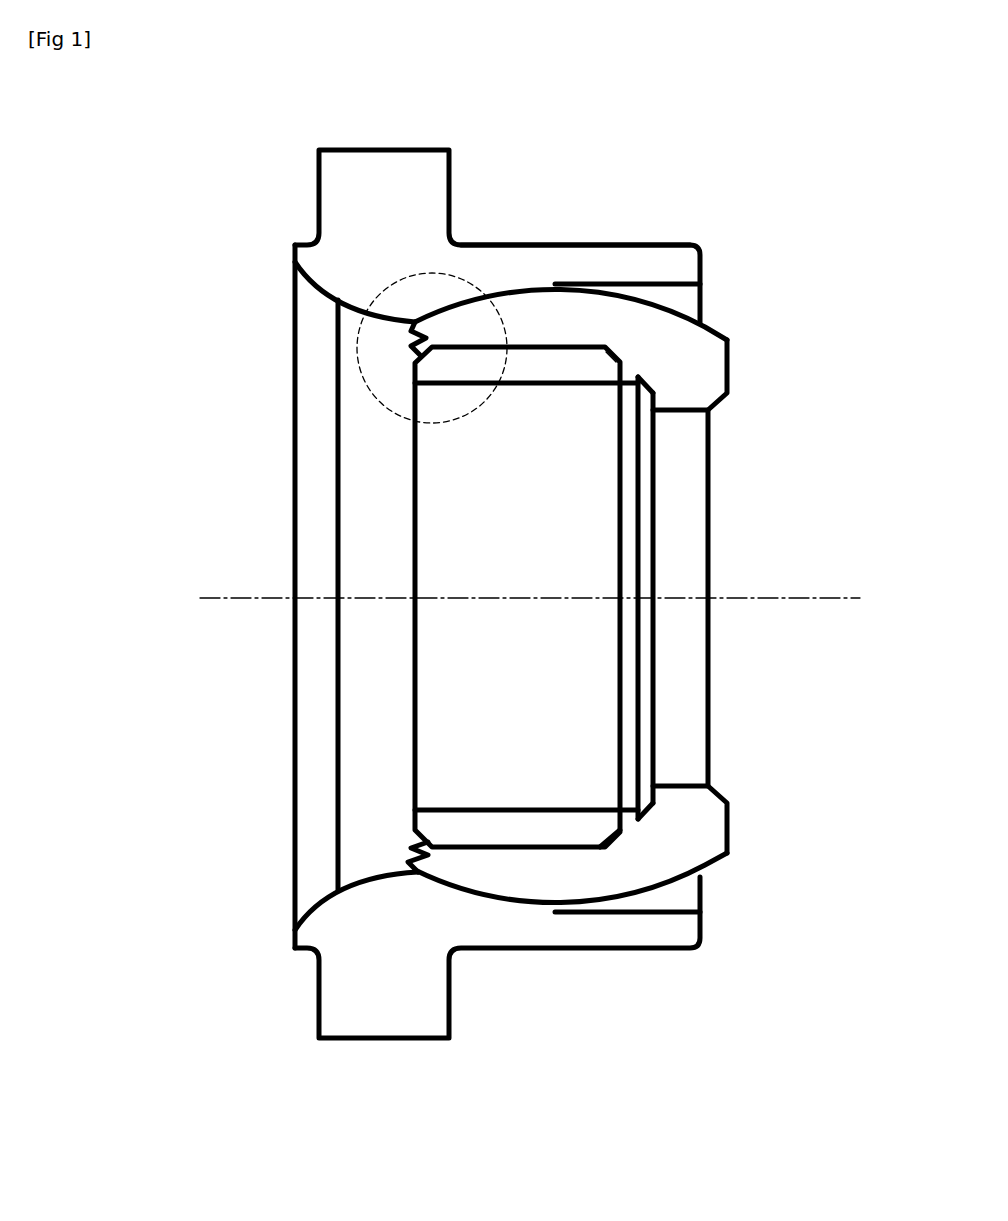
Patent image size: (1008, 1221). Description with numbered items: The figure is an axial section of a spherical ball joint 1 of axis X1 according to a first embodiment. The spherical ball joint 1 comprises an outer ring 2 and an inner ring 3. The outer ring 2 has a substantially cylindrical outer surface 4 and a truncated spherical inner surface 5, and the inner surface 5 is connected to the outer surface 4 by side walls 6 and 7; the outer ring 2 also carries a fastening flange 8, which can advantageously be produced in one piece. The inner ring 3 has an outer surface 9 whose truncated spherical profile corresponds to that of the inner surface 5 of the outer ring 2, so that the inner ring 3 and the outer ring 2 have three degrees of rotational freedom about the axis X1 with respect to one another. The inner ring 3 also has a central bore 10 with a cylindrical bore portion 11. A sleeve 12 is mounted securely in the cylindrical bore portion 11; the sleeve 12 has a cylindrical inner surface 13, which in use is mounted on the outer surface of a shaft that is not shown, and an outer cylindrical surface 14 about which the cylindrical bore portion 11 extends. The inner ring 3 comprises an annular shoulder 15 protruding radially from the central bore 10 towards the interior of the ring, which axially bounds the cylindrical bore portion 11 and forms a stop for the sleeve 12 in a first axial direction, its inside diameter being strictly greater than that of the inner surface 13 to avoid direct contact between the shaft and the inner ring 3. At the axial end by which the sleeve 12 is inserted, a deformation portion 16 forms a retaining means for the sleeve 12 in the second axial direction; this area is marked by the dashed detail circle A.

The spherical ball joint 1 is at (200, 172).
The outer ring 2 is at (722, 930).
The inner ring 3 is at (745, 838).
The outer surface 4 is at (600, 245).
The inner surface 5 is at (533, 297).
The side wall 6 is at (700, 268).
The side wall 7 is at (300, 915).
The fastening flange 8 is at (340, 1002).
The outer surface 9 is at (497, 292).
The central bore 10 is at (687, 412).
The cylindrical bore portion 11 is at (463, 842).
The sleeve 12 is at (398, 812).
The inner surface 13 is at (536, 805).
The outer cylindrical surface 14 is at (560, 848).
The shoulder 15 is at (627, 368).
The deformation portion 16 is at (410, 345).
The detail region A is at (368, 407).
The axis X1 is at (530, 584).